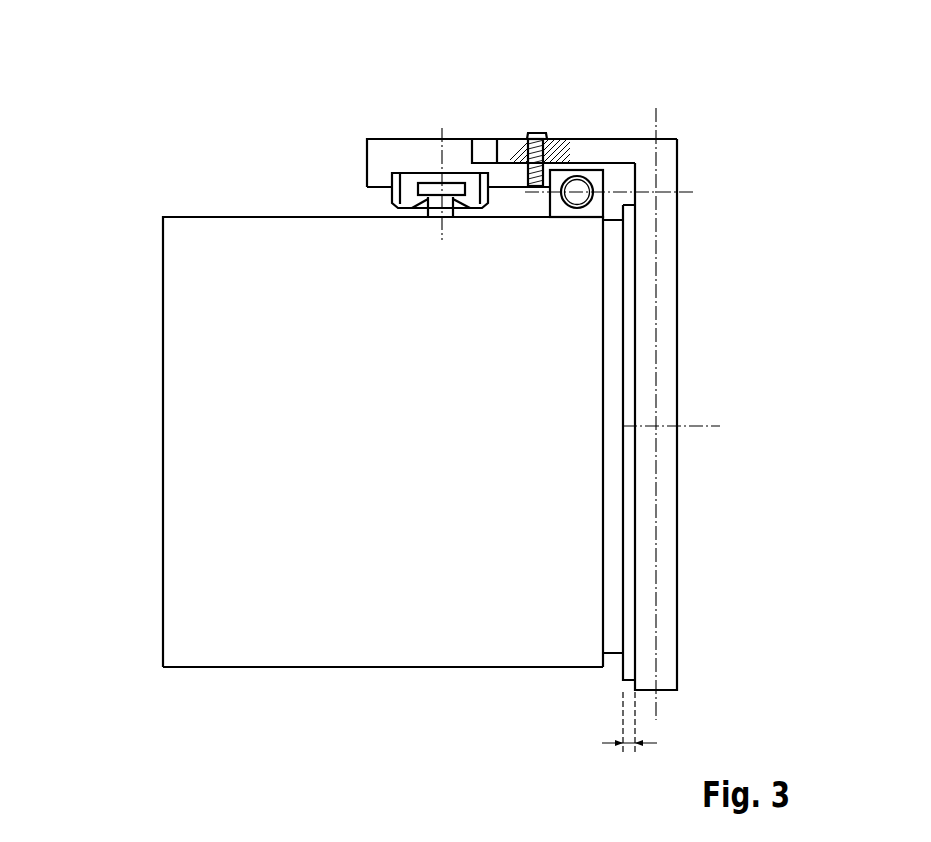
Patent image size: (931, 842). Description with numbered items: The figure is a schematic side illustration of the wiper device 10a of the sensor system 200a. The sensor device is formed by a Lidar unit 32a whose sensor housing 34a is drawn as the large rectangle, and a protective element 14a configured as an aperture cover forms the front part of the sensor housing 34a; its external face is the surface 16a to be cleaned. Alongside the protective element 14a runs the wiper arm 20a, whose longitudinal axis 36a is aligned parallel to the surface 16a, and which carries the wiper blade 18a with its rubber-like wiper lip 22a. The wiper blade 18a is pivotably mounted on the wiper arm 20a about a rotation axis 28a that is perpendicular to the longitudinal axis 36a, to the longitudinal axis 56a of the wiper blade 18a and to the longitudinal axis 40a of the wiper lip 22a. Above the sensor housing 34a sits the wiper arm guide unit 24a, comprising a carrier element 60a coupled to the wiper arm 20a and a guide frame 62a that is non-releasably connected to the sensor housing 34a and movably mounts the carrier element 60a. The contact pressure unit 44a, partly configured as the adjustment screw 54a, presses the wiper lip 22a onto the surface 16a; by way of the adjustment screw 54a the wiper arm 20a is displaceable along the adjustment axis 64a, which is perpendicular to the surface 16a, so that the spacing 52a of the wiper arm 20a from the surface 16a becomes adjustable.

The sensor system 200a is at (143, 176).
The wiper device 10a is at (755, 566).
The protective element 14a is at (612, 645).
The surface 16a is at (630, 582).
The wiper blade 18a is at (710, 460).
The wiper arm 20a is at (668, 236).
The wiper lip 22a is at (627, 672).
The wiper arm guide unit 24a is at (369, 122).
The rotation axis 28a is at (660, 416).
The Lidar unit 32a is at (134, 356).
The sensor housing 34a is at (184, 655).
The longitudinal axis of the wiper arm 36a is at (722, 396).
The longitudinal axis of the wiper lip 40a is at (722, 396).
The longitudinal axis of the wiper blade 56a is at (712, 97).
The contact pressure unit 44a is at (550, 114).
The spacing 52a is at (629, 746).
The adjustment screw 54a is at (545, 132).
The carrier element 60a is at (410, 150).
The guide frame 62a is at (340, 189).
The adjustment axis 64a is at (688, 191).